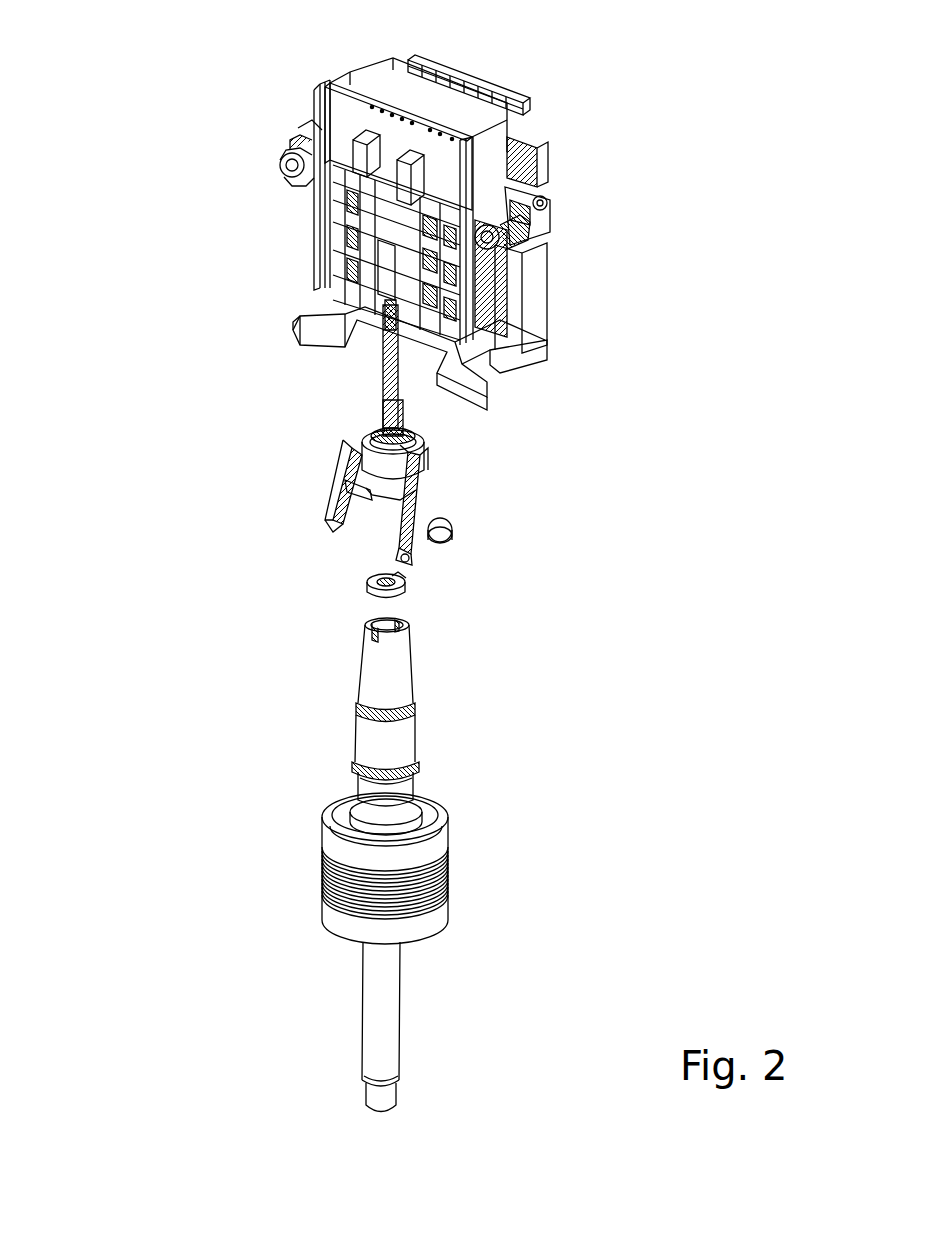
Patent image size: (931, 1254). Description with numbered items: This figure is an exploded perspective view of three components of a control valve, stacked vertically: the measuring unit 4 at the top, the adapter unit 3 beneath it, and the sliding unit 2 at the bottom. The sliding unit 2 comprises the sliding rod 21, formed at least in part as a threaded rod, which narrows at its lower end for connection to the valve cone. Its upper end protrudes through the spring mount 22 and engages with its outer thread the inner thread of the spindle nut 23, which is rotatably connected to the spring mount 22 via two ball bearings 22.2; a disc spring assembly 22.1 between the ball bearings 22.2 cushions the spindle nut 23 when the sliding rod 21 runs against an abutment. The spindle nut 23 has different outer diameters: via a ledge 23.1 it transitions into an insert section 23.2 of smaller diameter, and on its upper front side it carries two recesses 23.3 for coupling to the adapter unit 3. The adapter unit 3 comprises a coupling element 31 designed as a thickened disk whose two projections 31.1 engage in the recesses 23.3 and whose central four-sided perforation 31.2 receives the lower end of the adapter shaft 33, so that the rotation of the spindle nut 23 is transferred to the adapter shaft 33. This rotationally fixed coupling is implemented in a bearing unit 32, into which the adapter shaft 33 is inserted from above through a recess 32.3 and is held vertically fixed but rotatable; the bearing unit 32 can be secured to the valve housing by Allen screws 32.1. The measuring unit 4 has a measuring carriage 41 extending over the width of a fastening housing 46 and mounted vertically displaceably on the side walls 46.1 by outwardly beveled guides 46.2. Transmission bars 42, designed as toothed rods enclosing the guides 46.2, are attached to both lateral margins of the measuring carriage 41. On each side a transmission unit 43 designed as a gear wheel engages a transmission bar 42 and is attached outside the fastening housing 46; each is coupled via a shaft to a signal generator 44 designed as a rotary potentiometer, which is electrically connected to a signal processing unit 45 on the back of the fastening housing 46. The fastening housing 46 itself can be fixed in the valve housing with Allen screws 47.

The sliding unit 2 is at (163, 865).
The sliding rod 21 is at (387, 1002).
The spring mount 22 is at (293, 903).
The disc spring assembly 22.1 is at (447, 872).
The ball bearings 22.2 is at (443, 800).
The spindle nut 23 is at (293, 772).
The ledge 23.1 is at (410, 712).
The insert section 23.2 is at (393, 672).
The recesses 23.3 is at (390, 623).
The adapter unit 3 is at (163, 502).
The coupling element 31 is at (367, 588).
The projections 31.1 is at (363, 598).
The perforation 31.2 is at (405, 575).
The bearing unit 32 is at (305, 465).
The Allen screws 32.1 is at (450, 522).
The recess 32.3 is at (370, 428).
The adapter shaft 33 is at (410, 418).
The measuring unit 4 is at (163, 286).
The measuring carriage 41 is at (375, 240).
The transmission bars 42 is at (503, 313).
The transmission unit 43 is at (285, 160).
The signal generator 44 is at (548, 178).
The signal processing unit 45 is at (540, 157).
The fastening housing 46 is at (378, 80).
The side walls 46.1 is at (340, 118).
The guides 46.2 is at (298, 130).
The Allen screws 47 is at (385, 313).